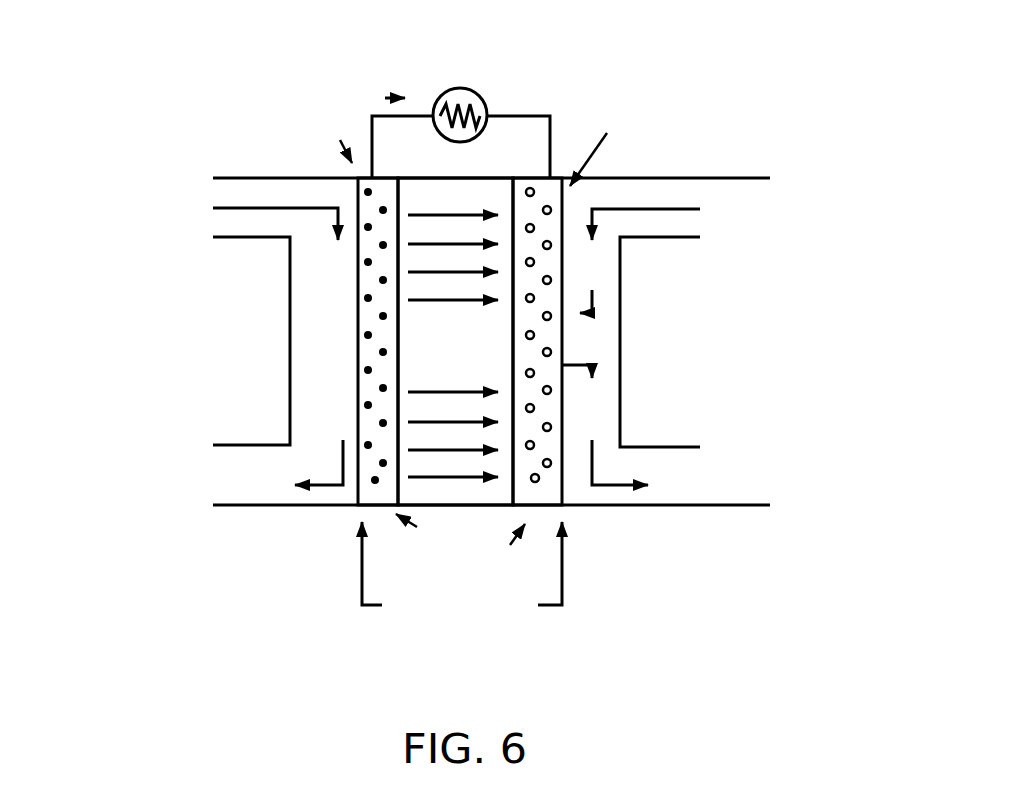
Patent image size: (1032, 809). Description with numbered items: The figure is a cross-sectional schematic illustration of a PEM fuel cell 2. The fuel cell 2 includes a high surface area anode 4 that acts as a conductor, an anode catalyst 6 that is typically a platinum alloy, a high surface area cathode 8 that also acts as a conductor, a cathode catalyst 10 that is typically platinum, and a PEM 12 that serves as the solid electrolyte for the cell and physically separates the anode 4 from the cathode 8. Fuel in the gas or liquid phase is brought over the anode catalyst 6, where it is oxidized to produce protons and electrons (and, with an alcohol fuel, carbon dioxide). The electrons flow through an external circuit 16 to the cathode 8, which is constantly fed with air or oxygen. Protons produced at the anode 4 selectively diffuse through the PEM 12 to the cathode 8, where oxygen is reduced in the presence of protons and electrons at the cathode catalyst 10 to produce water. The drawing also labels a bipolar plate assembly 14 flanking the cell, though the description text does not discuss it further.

The fuel cell 2 is at (665, 78).
The anode 4 is at (375, 497).
The anode catalyst 6 is at (367, 443).
The cathode 8 is at (548, 490).
The cathode catalyst 10 is at (551, 427).
The PEM 12 is at (493, 194).
The bipolar plate assembly 14 is at (565, 550).
The external circuit 16 is at (512, 114).